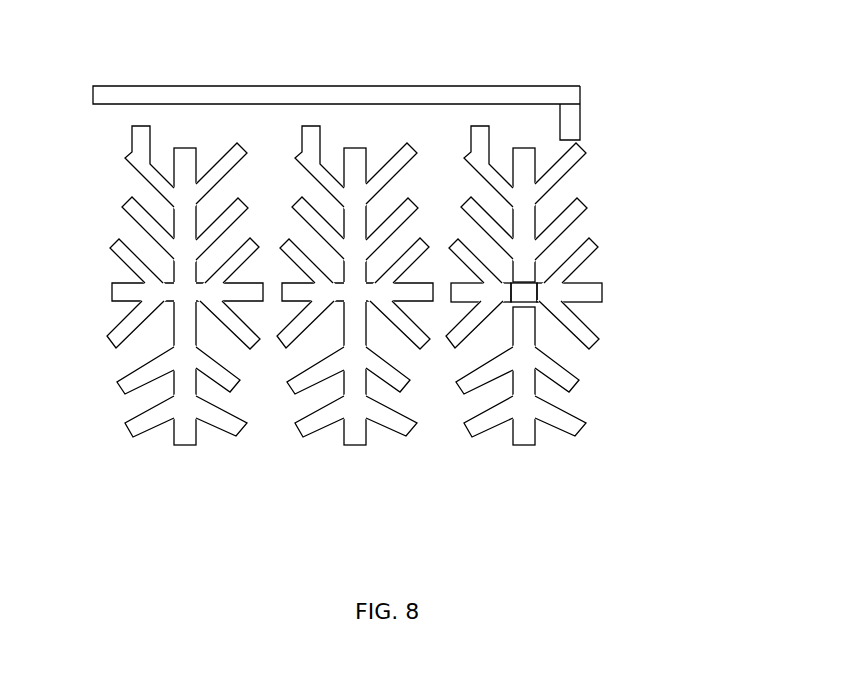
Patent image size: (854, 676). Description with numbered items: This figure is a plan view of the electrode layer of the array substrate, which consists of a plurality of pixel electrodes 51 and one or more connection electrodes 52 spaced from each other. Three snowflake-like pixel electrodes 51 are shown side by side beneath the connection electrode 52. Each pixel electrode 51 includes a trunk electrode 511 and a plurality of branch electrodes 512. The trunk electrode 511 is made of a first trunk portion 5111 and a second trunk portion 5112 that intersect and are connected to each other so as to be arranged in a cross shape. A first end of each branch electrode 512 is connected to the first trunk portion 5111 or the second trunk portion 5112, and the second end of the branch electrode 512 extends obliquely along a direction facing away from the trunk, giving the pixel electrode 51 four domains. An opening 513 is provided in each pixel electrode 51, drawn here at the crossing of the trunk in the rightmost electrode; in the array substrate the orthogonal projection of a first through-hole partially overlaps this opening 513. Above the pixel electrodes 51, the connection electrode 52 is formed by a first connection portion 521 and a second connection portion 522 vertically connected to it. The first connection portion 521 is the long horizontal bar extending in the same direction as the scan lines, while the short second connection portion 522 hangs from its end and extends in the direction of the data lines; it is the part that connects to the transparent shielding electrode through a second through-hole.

The connection electrode 52 is at (388, 72).
The first connection portion 521 is at (414, 96).
The second connection portion 522 is at (568, 117).
The pixel electrode 51 is at (367, 333).
The trunk electrode 511 is at (357, 327).
The first trunk portion 5111 is at (352, 327).
The second trunk portion 5112 is at (302, 287).
The branch electrode 512 is at (408, 318).
The opening 513 is at (538, 288).